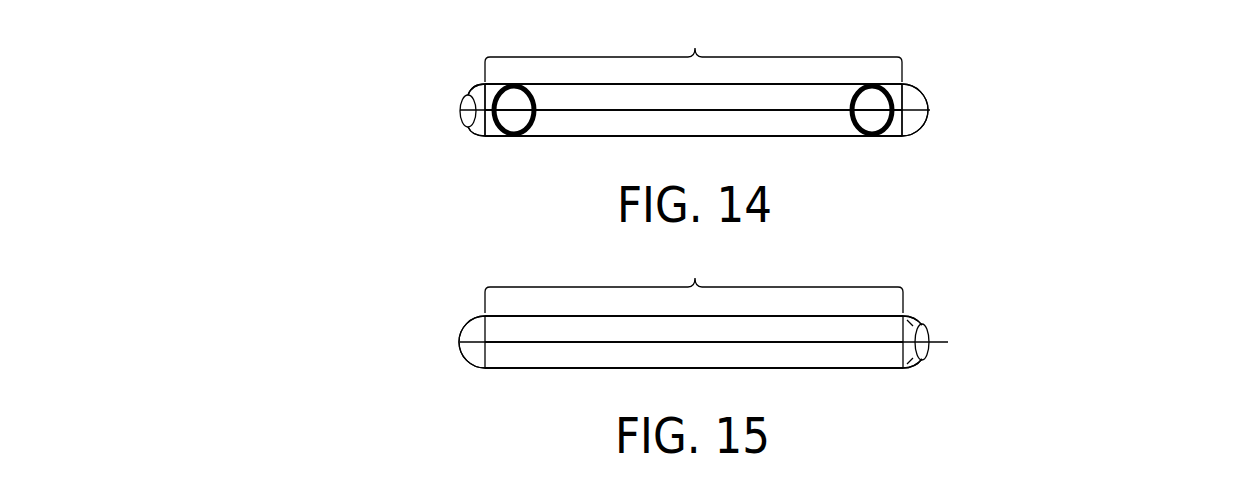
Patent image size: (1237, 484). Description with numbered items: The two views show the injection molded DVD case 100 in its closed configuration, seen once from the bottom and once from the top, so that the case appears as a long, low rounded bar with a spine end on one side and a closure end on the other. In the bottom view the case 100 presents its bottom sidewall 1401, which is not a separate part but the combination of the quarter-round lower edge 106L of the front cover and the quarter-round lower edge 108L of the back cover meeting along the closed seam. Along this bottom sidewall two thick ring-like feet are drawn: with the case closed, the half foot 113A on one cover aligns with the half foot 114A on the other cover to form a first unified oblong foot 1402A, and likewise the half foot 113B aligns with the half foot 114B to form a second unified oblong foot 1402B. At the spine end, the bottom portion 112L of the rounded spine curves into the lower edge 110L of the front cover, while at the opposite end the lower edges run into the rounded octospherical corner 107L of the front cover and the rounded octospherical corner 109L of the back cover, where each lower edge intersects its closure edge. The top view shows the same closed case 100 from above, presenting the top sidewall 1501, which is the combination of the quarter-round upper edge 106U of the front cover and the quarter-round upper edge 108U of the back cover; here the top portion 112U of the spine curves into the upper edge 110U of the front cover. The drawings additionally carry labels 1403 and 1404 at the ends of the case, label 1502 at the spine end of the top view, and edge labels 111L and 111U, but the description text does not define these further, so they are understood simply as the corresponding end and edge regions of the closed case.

In FIG. 14, the DVD case 100 is at (583, 172).
In FIG. 15, the DVD case 100 is at (413, 287).
In FIG. 14, the bottom sidewall 1401 is at (695, 48).
In FIG. 15, the top sidewall 1501 is at (695, 278).
In FIG. 14, the first unified oblong foot 1402A is at (517, 120).
In FIG. 14, the second unified oblong foot 1402B is at (874, 120).
In FIG. 14, the right end portion 1403 is at (1045, 110).
In FIG. 14, the left end portion 1404 is at (313, 133).
In FIG. 15, the left end portion 1404 is at (1132, 342).
In FIG. 15, the upper left end portion 1502 is at (396, 354).
In FIG. 14, the quarter round lower edge 106L is at (709, 98).
In FIG. 14, the quarter round lower edge 108L is at (672, 123).
In FIG. 15, the quarter round upper edge 106U is at (710, 328).
In FIG. 15, the quarter round upper edge 108U is at (672, 355).
In FIG. 14, the lower edge 110L is at (474, 95).
In FIG. 14, the lower bottom surface 111L is at (474, 126).
In FIG. 14, the bottom portion of the spine 112L is at (265, 110).
In FIG. 15, the upper edge 110U is at (476, 330).
In FIG. 15, the upper bottom surface 111U is at (476, 353).
In FIG. 15, the top portion of the spine 112U is at (1132, 342).
In FIG. 14, the half foot 113A is at (483, 91).
In FIG. 14, the half foot 113B is at (897, 91).
In FIG. 14, the half foot 114A is at (496, 136).
In FIG. 14, the half foot 114B is at (897, 133).
In FIG. 14, the rounded octospherical corner 107L is at (912, 99).
In FIG. 14, the rounded octospherical corner 109L is at (912, 123).